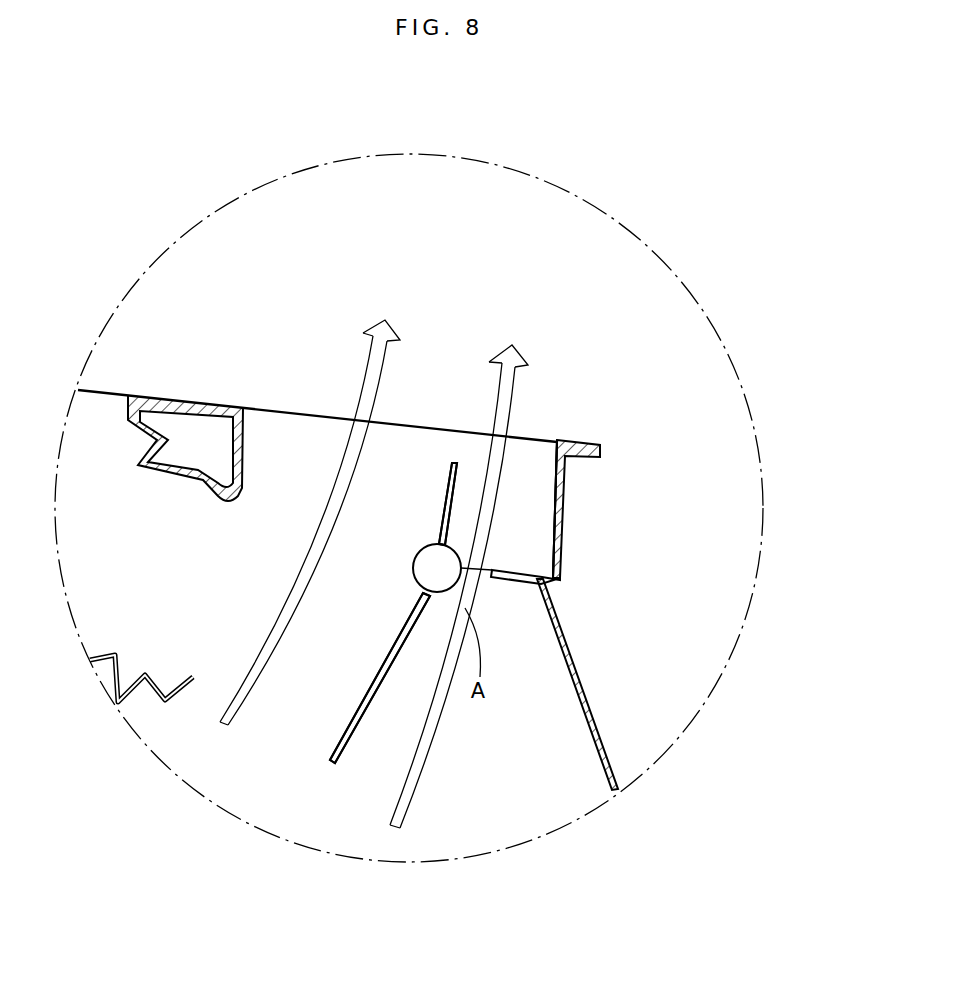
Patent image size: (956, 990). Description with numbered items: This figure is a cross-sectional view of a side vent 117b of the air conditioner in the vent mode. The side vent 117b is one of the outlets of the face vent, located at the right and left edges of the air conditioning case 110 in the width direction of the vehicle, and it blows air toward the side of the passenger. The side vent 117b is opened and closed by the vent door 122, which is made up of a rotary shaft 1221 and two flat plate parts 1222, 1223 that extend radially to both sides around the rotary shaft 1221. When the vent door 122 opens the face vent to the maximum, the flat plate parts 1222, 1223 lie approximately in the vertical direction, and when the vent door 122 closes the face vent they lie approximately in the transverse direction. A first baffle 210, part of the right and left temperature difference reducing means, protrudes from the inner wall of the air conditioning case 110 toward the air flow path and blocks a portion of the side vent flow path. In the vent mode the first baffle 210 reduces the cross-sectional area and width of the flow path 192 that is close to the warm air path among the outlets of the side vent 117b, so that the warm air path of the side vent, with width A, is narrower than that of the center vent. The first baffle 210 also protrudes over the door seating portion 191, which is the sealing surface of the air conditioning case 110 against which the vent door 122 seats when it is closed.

The air conditioning case 110 is at (563, 530).
The side vent 117b is at (295, 434).
The door seating portion 191 is at (563, 547).
The flow path 192 is at (506, 541).
The first baffle 210 is at (513, 580).
The vent door 122 is at (367, 723).
The rotary shaft 1221 is at (437, 570).
The flat plate part 1222 is at (440, 500).
The flat plate part 1223 is at (375, 673).